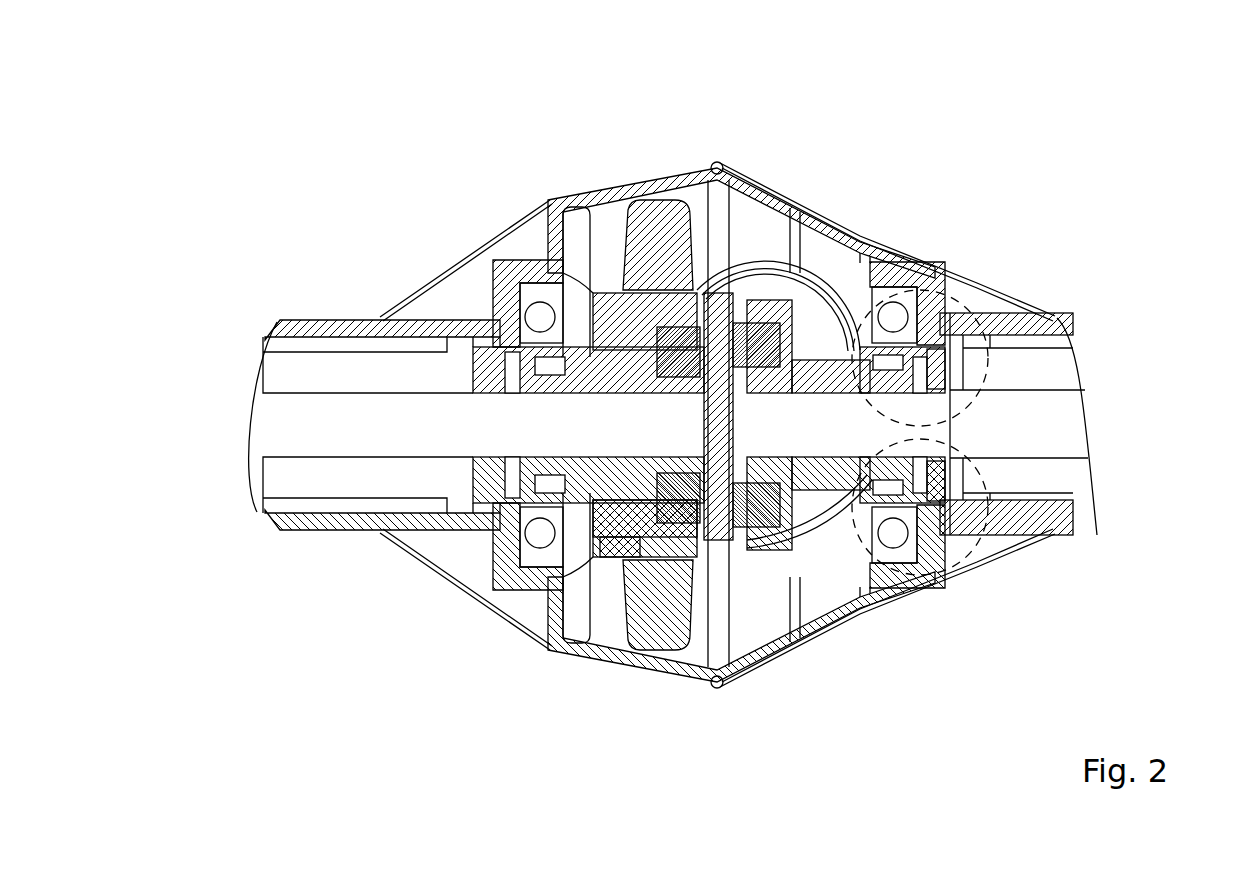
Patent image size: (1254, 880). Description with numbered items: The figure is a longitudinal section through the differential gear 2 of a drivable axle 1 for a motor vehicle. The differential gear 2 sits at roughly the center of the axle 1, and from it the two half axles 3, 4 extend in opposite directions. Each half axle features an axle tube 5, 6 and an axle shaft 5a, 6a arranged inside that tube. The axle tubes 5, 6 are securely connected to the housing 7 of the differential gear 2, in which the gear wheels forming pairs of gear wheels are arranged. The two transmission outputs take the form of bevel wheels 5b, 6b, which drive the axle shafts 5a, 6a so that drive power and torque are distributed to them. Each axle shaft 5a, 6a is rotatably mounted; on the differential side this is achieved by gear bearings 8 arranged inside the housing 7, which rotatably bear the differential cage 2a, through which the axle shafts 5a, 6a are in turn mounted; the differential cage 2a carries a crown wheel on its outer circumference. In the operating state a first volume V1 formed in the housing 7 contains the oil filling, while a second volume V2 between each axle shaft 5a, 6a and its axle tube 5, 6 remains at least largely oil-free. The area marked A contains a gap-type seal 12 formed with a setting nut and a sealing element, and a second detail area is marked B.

The axle 1 is at (770, 162).
The differential gear 2 is at (805, 234).
The differential cage 2a is at (760, 560).
The half axle 3 is at (334, 560).
The half axle 4 is at (1013, 287).
The axle tube 5 is at (267, 506).
The axle shaft 5a is at (303, 423).
The bevel wheel 5b is at (610, 580).
The axle tube 6 is at (1057, 327).
The axle shaft 6a is at (1067, 443).
The bevel wheel 6b is at (745, 565).
The housing 7 is at (573, 186).
The gear bearing 8 is at (503, 540).
The gap-type seal 12 is at (1057, 327).
The area A is at (963, 303).
The detail B is at (963, 560).
The first volume V1 is at (776, 636).
The second volume V2 is at (293, 370).